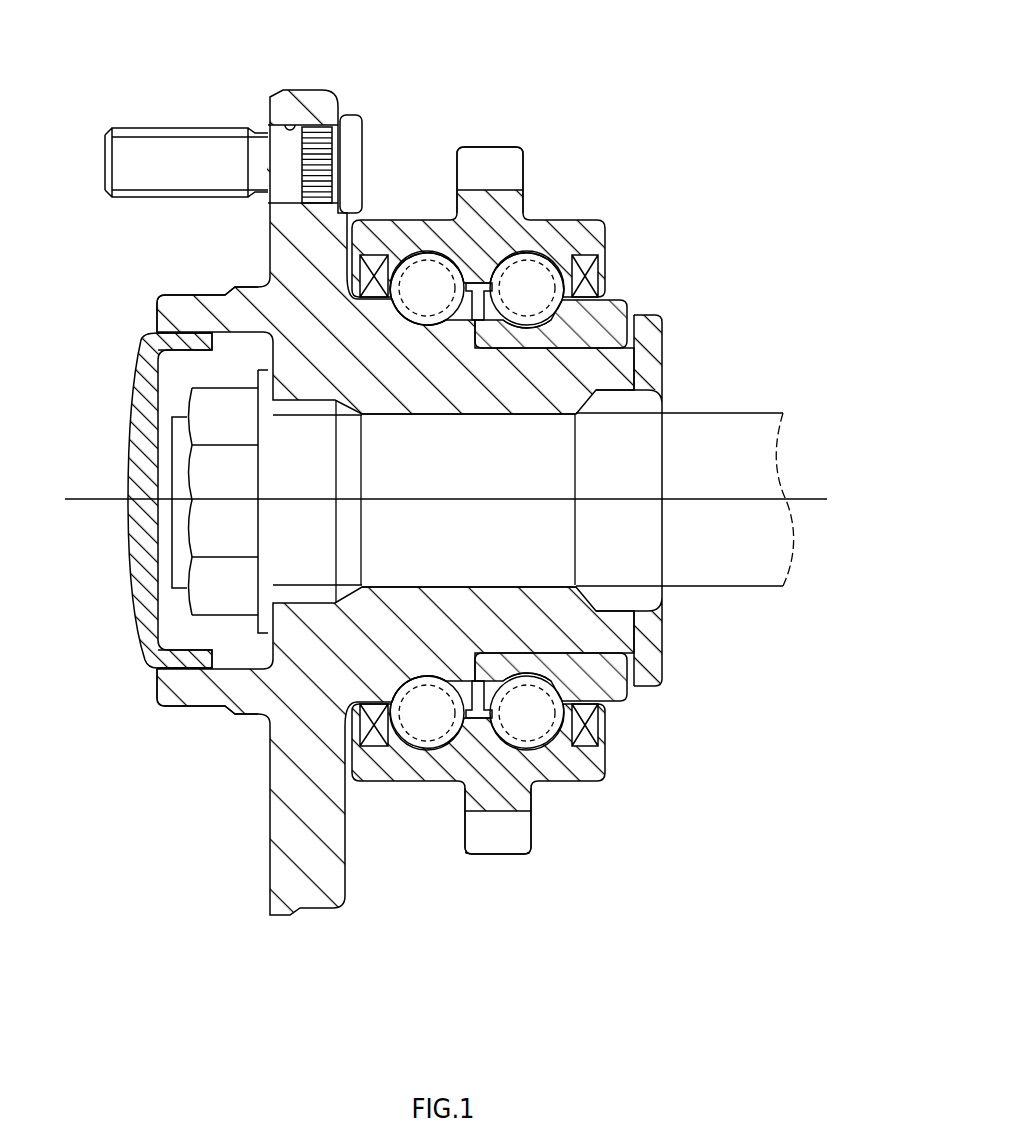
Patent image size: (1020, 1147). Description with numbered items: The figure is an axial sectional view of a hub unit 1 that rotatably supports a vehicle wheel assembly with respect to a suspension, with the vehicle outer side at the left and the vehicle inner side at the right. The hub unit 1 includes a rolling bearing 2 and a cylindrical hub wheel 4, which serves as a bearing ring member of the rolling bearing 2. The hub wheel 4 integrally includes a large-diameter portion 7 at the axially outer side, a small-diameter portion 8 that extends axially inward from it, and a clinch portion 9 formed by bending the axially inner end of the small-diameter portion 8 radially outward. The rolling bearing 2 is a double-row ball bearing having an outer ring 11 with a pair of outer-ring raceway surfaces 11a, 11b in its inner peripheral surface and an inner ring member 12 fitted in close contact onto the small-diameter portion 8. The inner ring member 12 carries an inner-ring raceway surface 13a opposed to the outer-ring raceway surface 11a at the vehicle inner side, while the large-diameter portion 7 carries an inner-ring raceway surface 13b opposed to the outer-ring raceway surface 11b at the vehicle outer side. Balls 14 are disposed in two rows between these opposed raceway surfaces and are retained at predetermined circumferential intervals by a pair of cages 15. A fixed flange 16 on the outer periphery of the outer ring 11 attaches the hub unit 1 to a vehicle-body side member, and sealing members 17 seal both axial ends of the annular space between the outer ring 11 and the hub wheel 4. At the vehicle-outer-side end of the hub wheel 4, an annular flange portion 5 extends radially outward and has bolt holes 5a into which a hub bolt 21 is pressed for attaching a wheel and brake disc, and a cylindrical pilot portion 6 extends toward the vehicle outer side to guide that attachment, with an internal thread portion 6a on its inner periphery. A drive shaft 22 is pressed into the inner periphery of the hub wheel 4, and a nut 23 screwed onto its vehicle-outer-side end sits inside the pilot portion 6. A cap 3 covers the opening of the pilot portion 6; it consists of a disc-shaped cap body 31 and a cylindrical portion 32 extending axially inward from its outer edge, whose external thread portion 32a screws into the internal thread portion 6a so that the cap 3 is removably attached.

The hub unit 1 is at (621, 131).
The rolling bearing 2 is at (617, 202).
The cap 3 is at (118, 442).
The hub wheel 4 is at (223, 260).
The flange portion 5 is at (275, 105).
The bolt holes 5a is at (300, 127).
The pilot portion 6 is at (181, 698).
The internal thread portion 6a is at (182, 340).
The large-diameter portion 7 is at (383, 405).
The small-diameter portion 8 is at (542, 400).
The clinch portion 9 is at (647, 365).
The outer ring 11 is at (411, 228).
The outer-ring raceway surface 11a is at (503, 263).
The outer-ring raceway surface 11b is at (404, 258).
The inner ring member 12 is at (622, 310).
The inner-ring raceway surface 13a is at (600, 296).
The inner-ring raceway surface 13b is at (437, 326).
The balls 14 is at (505, 260).
The cages 15 is at (418, 724).
The fixed flange 16 is at (522, 150).
The sealing members 17 is at (375, 275).
The hub bolt 21 is at (366, 109).
The drive shaft 22 is at (725, 587).
The nut 23 is at (190, 397).
The cap body 31 is at (140, 543).
The cylindrical portion 32 is at (196, 660).
The external thread portion 32a is at (185, 688).